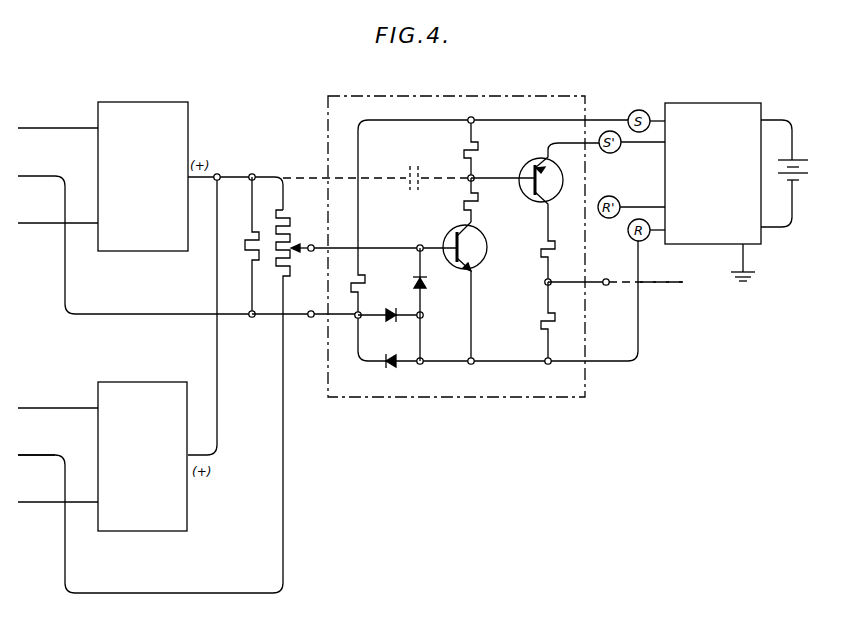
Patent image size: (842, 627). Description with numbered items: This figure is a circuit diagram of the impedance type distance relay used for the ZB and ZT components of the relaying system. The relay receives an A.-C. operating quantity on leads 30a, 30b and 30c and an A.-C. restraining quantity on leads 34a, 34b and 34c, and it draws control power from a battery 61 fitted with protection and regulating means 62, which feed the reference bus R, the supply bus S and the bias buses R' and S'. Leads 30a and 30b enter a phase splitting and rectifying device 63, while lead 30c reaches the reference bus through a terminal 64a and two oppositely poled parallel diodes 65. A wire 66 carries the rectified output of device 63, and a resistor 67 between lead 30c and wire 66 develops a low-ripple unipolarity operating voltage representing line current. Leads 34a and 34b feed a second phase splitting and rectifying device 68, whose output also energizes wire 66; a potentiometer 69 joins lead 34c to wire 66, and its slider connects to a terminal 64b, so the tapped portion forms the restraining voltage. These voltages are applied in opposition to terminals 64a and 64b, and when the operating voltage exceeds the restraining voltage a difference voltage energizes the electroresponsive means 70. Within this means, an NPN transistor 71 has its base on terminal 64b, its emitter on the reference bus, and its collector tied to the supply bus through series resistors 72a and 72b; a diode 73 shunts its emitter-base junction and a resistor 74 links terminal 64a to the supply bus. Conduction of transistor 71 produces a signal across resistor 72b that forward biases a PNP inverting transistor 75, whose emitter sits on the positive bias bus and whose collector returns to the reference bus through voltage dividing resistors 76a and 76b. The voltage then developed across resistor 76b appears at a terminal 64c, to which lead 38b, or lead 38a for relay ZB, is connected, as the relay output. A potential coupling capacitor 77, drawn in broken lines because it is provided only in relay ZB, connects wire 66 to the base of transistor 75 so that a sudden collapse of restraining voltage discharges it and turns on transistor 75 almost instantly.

The lead 30a is at (38, 130).
The lead 30b is at (38, 225).
The lead 30c is at (38, 178).
The lead 34a is at (38, 410).
The lead 34b is at (38, 504).
The lead 34c is at (38, 457).
The lead 38a is at (662, 304).
The lead 38b is at (667, 283).
The battery 61 is at (800, 164).
The protection and regulating means 62 is at (728, 110).
The phase splitting and rectifying device 63 is at (158, 110).
The terminal 64a is at (311, 318).
The terminal 64b is at (311, 245).
The terminal 64c is at (606, 279).
The diodes 65 is at (391, 323).
The wire 66 is at (252, 174).
The resistor 67 is at (246, 248).
The phase splitting and rectifying device 68 is at (158, 390).
The potentiometer 69 is at (279, 276).
The electroresponsive means 70 is at (338, 96).
The NPN transistor 71 is at (451, 237).
The resistor 72a is at (479, 200).
The resistor 72b is at (463, 152).
The diode 73 is at (428, 283).
The resistor 74 is at (366, 283).
The inverting transistor 75 is at (533, 164).
The resistor 76a is at (541, 252).
The resistor 76b is at (541, 326).
The potential coupling capacitor 77 is at (408, 191).